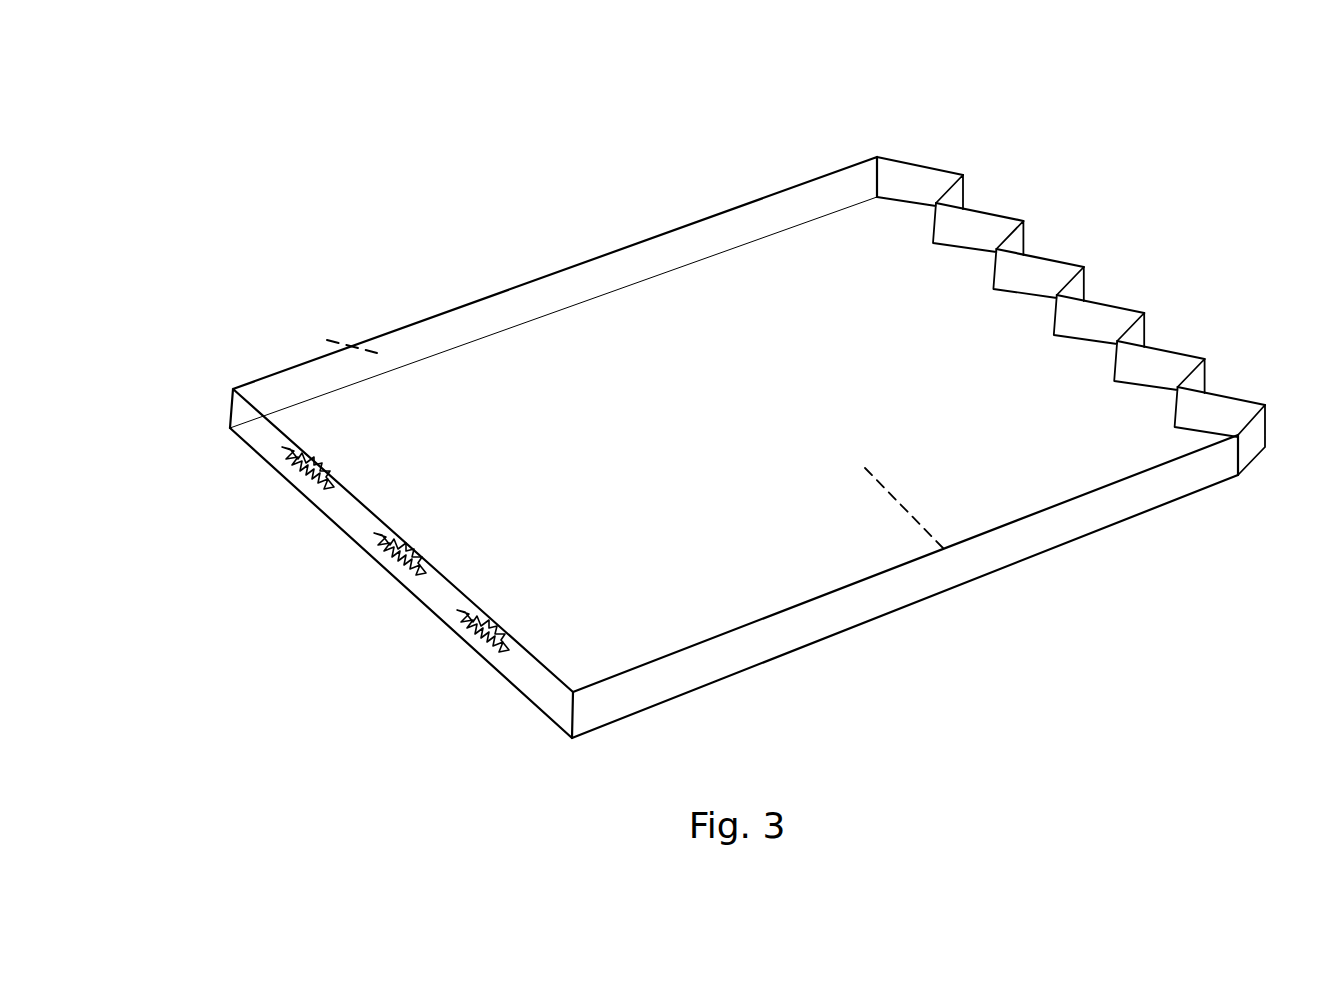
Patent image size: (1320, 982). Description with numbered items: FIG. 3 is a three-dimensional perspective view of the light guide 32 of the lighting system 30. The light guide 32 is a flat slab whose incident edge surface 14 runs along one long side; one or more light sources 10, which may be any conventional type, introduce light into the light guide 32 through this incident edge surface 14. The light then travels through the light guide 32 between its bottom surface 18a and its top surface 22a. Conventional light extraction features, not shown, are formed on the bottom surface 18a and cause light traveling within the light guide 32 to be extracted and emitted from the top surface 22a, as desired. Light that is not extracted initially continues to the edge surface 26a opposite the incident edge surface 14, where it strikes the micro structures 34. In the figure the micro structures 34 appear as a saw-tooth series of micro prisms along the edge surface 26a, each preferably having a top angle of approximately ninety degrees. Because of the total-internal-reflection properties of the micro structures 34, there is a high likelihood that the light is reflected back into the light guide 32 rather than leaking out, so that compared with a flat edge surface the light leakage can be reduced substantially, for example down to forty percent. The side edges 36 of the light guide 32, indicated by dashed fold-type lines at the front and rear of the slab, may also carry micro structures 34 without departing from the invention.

The light source 10 is at (490, 628).
The incident edge surface 14 is at (265, 428).
The bottom surface 18a is at (943, 548).
The top surface 22a is at (905, 554).
The edge surface 26a is at (1193, 328).
The lighting system 30 is at (377, 224).
The light guide 32 is at (705, 268).
The micro structures 34 is at (1039, 245).
The side edges 36 is at (323, 340).